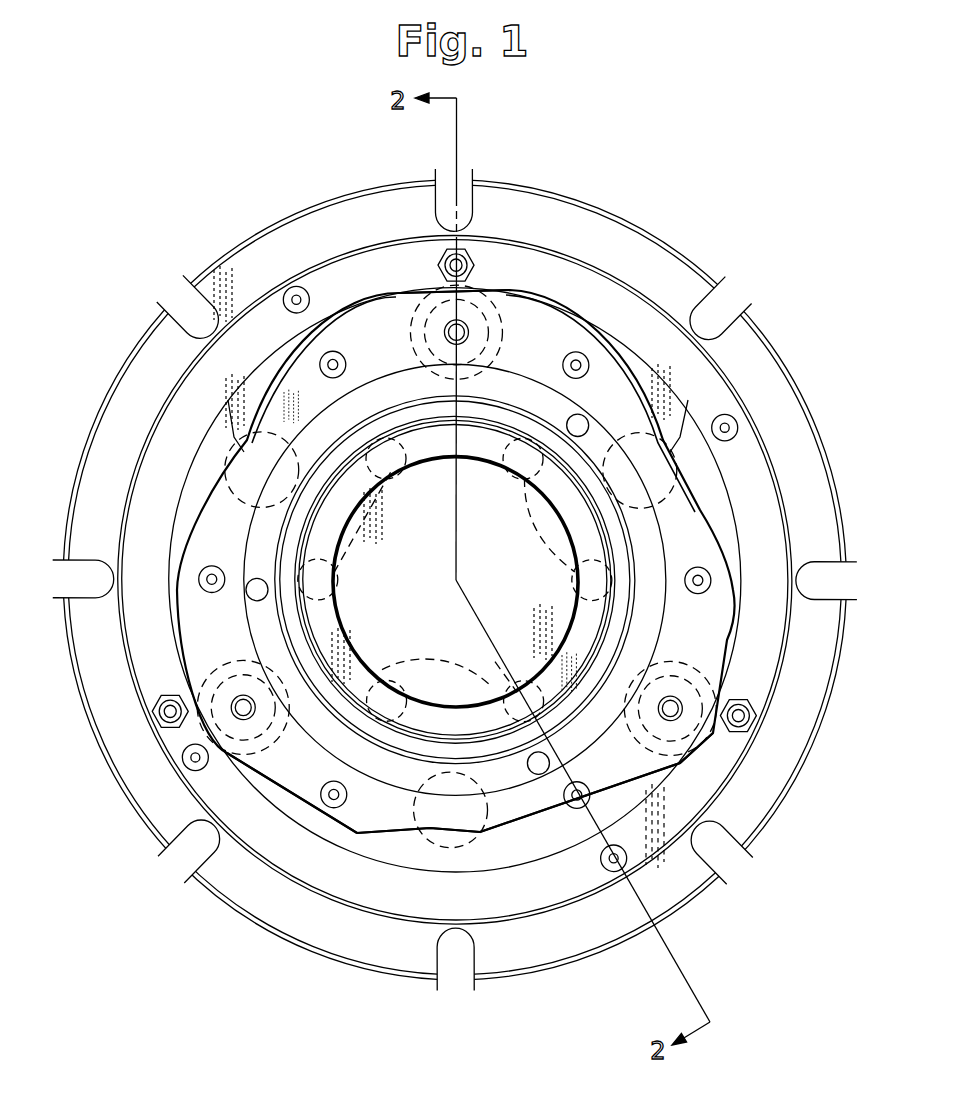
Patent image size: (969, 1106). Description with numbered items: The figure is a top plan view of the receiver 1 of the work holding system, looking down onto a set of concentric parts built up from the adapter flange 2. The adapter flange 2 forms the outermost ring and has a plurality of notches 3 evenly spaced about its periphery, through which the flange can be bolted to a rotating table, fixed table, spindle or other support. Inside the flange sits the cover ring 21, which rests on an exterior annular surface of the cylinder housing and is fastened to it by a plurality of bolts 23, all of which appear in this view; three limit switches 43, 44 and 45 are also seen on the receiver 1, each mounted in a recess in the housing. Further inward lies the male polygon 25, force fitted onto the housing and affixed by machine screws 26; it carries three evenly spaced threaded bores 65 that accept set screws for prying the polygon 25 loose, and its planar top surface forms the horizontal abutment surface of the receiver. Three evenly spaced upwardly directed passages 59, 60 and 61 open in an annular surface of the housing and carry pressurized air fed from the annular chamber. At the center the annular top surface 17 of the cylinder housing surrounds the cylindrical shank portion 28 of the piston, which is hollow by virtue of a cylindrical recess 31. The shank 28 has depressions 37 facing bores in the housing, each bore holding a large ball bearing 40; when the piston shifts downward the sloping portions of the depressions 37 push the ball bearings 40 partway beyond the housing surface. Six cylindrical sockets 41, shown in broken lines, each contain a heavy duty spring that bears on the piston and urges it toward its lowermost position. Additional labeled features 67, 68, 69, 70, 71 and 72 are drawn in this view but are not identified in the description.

The receiver 1 is at (652, 188).
The adapter flange 2 is at (655, 253).
The notches 3 is at (463, 197).
The annular top surface 17 is at (320, 622).
The cover ring 21 is at (695, 365).
The bolts 23 is at (308, 296).
The male polygon 25 is at (753, 490).
The machine screws 26 is at (567, 362).
The cylindrical shank portion 28 is at (420, 443).
The cylindrical recess 31 is at (413, 561).
The depressions 37 is at (330, 592).
The ball bearings 40 is at (454, 580).
The cylindrical sockets 41 is at (232, 439).
The limit switch 43 is at (470, 255).
The limit switch 44 is at (150, 713).
The limit switch 45 is at (760, 715).
The passage 59 is at (543, 770).
The passage 60 is at (246, 596).
The passage 61 is at (578, 413).
The threaded bores 65 is at (470, 337).
The flat edge segment 67 is at (493, 290).
The plate edge step 68 is at (239, 452).
The plate edge segment 69 is at (203, 780).
The plate edge segment 70 is at (423, 867).
The plate edge segment 71 is at (710, 740).
The plate edge step 72 is at (686, 410).